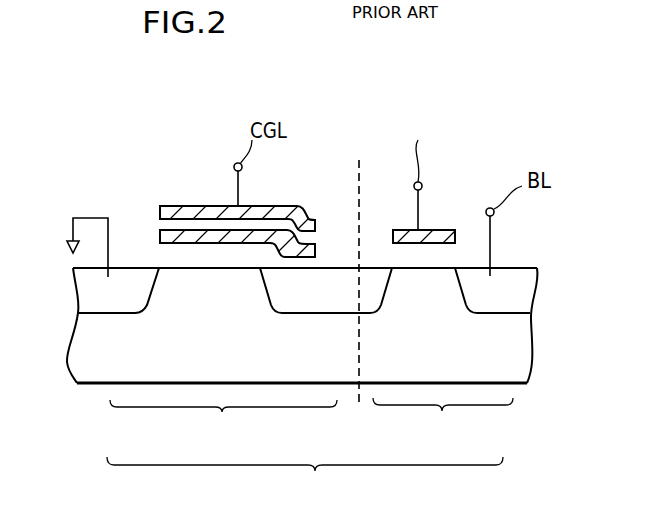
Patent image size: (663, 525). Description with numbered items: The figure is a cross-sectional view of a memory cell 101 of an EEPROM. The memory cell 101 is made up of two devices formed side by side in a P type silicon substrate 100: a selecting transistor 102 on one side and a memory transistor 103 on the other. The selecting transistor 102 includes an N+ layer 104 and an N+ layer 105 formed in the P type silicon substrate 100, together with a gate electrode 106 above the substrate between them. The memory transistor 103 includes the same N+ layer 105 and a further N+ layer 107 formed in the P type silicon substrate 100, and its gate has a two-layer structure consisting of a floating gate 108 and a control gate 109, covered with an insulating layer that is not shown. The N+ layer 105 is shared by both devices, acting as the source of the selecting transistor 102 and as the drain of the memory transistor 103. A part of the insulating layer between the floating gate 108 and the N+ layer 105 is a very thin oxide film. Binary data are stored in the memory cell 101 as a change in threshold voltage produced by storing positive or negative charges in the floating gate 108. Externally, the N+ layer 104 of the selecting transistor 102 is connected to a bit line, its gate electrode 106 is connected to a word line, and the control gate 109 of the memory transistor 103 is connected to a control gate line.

The P type silicon substrate 100 is at (82, 362).
The memory cell 101 is at (305, 477).
The selecting transistor 102 is at (443, 419).
The memory transistor 103 is at (223, 421).
The N+ layer 104 is at (536, 297).
The N+ layer 105 is at (338, 280).
The gate electrode 106 is at (448, 229).
The N+ layer 107 is at (83, 300).
The floating gate 108 is at (158, 212).
The control gate 109 is at (184, 210).